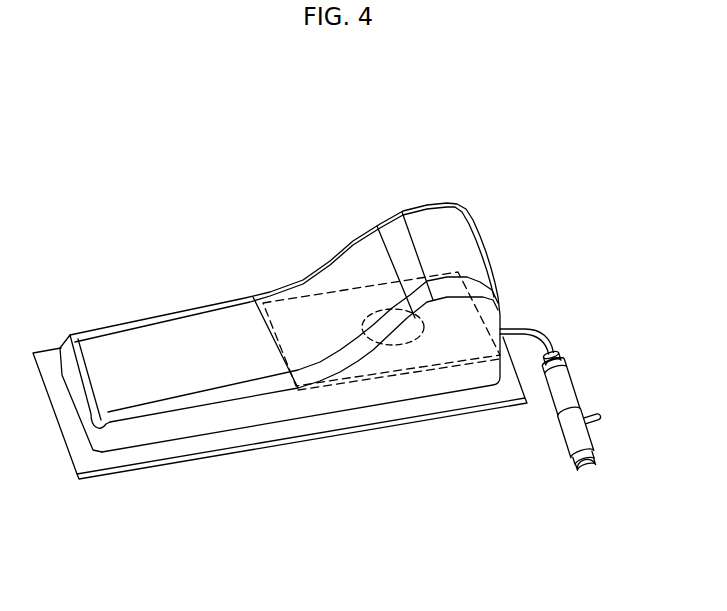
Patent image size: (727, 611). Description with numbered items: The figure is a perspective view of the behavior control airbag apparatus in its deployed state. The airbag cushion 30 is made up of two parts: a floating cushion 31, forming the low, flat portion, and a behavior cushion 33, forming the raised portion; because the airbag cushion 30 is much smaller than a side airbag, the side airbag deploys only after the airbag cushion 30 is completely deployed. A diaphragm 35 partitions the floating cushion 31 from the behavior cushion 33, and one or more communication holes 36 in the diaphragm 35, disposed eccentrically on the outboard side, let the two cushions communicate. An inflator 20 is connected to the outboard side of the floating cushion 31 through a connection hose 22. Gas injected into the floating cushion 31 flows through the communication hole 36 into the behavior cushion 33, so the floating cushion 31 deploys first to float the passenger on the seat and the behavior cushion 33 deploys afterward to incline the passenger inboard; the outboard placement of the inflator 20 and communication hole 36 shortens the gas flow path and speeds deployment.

The inflator 20 is at (586, 377).
The connection hose 22 is at (530, 330).
The airbag cushion 30 is at (178, 292).
The floating cushion 31 is at (148, 340).
The behavior cushion 33 is at (432, 222).
The diaphragm 35 is at (388, 373).
The communication hole 36 is at (405, 343).